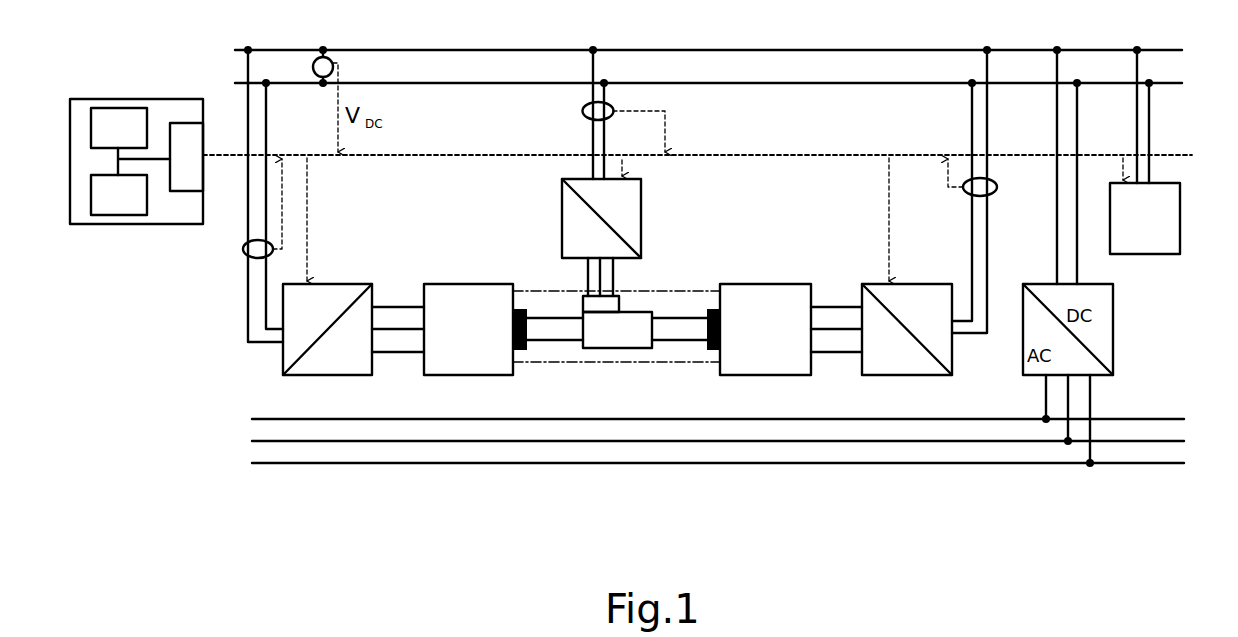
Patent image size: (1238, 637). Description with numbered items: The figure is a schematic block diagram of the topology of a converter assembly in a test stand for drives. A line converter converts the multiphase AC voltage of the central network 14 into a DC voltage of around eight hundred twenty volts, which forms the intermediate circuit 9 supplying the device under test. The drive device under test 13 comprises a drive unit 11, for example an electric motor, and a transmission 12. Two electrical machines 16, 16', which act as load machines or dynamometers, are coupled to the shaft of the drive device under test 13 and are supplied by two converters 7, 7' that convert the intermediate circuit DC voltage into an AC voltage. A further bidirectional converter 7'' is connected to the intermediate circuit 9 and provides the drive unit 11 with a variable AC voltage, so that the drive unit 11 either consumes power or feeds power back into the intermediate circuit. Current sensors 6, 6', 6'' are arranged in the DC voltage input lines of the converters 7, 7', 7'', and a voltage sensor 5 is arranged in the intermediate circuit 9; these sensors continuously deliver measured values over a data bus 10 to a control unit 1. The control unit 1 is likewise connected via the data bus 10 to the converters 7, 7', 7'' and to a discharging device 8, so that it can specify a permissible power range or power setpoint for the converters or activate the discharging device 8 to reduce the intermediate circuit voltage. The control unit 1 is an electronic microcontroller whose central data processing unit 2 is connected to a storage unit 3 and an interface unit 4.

The control unit 1 is at (128, 99).
The central data processing unit 2 is at (126, 139).
The storage unit 3 is at (126, 206).
The interface unit 4 is at (194, 168).
The voltage sensor 5 is at (327, 58).
The current sensor 6 is at (241, 237).
The current sensor 6' is at (989, 196).
The current sensor 6'' is at (593, 127).
The converter 7 is at (327, 266).
The converter 7' is at (907, 266).
The bidirectional converter 7'' is at (569, 173).
The discharging device 8 is at (1152, 230).
The intermediate circuit 9 is at (424, 40).
The data bus 10 is at (702, 155).
The drive unit 11 is at (610, 305).
The transmission 12 is at (632, 342).
The drive device under test 13 is at (587, 362).
The central network 14 is at (1128, 470).
The electrical machine 16 is at (468, 329).
The electrical machine 16' is at (765, 329).